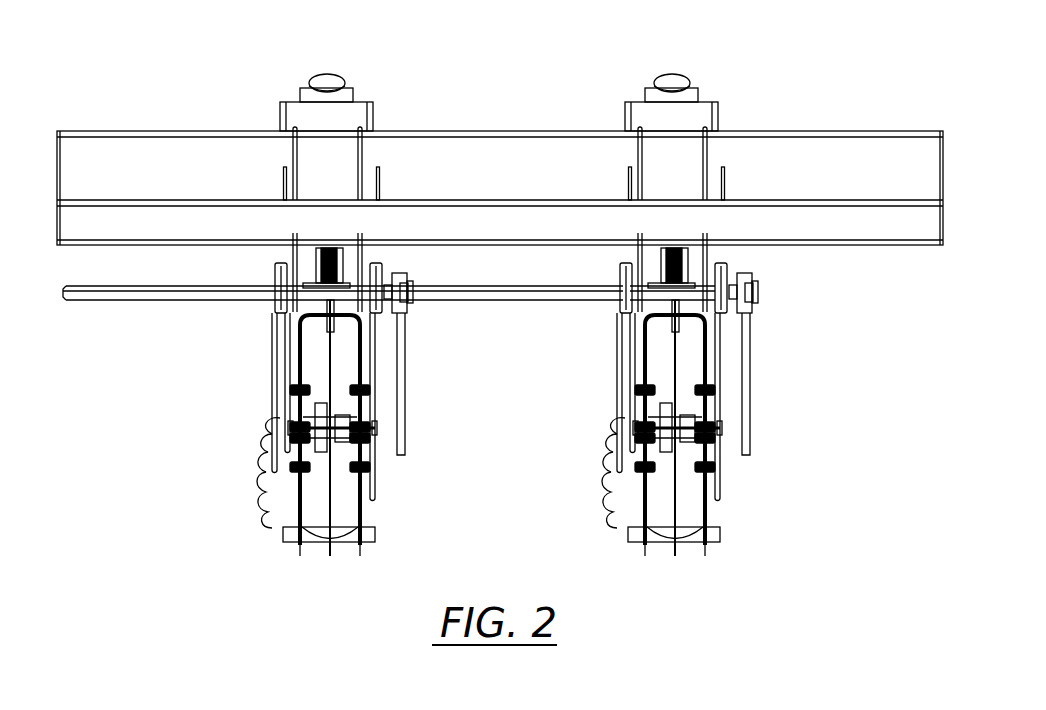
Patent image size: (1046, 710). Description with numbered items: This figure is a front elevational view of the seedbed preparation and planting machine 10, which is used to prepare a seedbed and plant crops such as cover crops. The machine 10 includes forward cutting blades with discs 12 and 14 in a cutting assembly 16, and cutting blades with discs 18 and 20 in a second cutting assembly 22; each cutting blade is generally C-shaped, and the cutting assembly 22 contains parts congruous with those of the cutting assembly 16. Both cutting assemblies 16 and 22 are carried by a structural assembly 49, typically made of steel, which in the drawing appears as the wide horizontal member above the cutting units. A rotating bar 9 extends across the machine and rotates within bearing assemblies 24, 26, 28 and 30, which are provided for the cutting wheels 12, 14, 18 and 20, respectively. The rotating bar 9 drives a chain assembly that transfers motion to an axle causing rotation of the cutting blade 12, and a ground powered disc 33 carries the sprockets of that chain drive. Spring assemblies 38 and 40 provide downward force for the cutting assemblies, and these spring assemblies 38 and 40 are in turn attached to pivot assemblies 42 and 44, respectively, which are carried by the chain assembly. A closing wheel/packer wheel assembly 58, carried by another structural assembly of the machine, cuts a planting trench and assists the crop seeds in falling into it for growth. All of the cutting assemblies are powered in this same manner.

The machine 10 is at (814, 96).
The structural assembly 49 is at (482, 137).
The rotating bar 9 is at (127, 295).
The cutting assembly 22 is at (250, 395).
The cutting assembly 16 is at (693, 324).
The spring assembly 40 is at (336, 283).
The spring assembly 38 is at (638, 249).
The bearing assembly 30 is at (275, 268).
The bearing assembly 28 is at (386, 269).
The bearing assembly 26 is at (587, 282).
The bearing assembly 24 is at (766, 282).
The pivot assembly 44 is at (270, 338).
The pivot assembly 42 is at (642, 407).
The cutting blade with disc 20 is at (296, 507).
The cutting blade with disc 14 is at (606, 435).
The cutting blade with disc 18 is at (362, 512).
The cutting blade with disc 12 is at (746, 435).
The closing wheel/packer wheel assembly 58 is at (583, 473).
The ground powered disc 33 is at (722, 437).